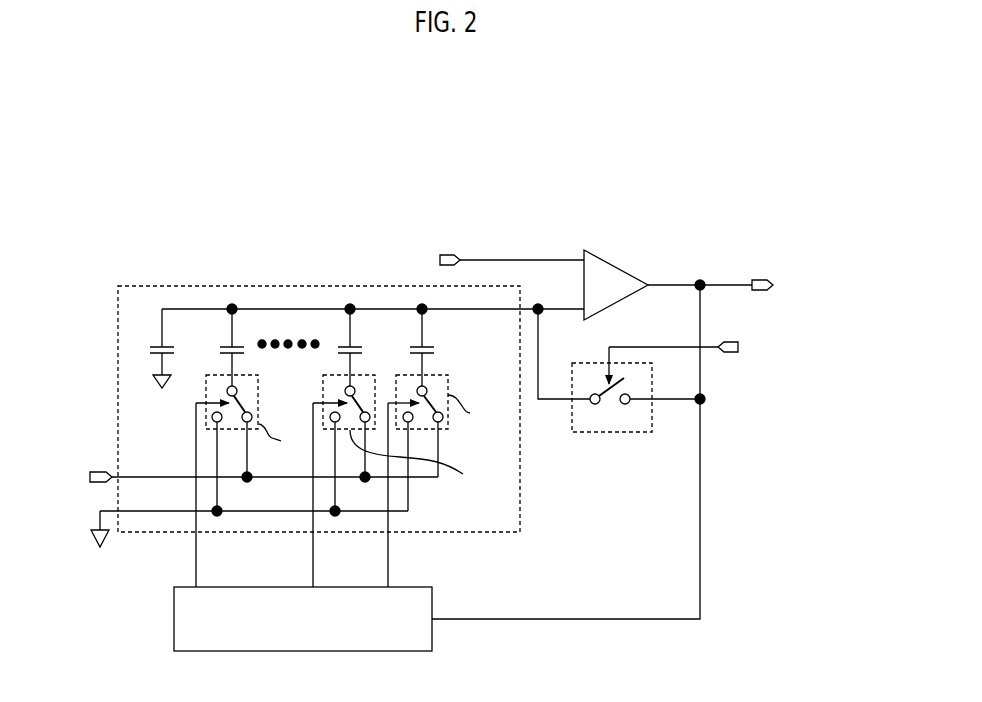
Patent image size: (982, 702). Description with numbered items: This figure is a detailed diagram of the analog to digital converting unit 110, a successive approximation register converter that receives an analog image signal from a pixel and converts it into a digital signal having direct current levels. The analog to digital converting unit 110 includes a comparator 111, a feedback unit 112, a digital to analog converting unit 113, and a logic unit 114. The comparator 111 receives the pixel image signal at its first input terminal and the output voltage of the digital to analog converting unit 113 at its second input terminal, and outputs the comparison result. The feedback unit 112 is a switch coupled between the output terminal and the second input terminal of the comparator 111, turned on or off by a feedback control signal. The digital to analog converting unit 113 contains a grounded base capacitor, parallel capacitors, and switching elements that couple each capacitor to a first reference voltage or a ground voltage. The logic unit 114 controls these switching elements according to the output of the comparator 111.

The analog to digital converting unit 110 is at (481, 204).
The comparator 111 is at (615, 262).
The feedback unit 112 is at (595, 433).
The digital to analog converting unit 113 is at (245, 287).
The logic unit 114 is at (173, 620).